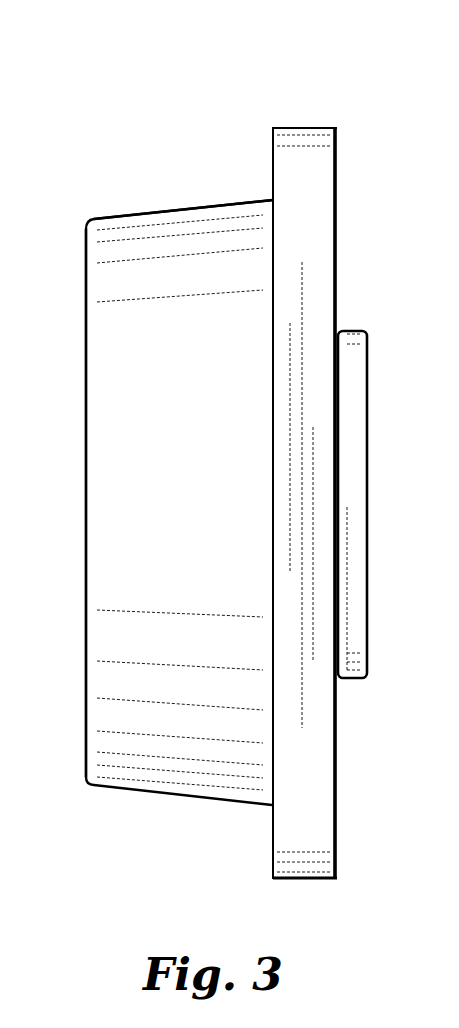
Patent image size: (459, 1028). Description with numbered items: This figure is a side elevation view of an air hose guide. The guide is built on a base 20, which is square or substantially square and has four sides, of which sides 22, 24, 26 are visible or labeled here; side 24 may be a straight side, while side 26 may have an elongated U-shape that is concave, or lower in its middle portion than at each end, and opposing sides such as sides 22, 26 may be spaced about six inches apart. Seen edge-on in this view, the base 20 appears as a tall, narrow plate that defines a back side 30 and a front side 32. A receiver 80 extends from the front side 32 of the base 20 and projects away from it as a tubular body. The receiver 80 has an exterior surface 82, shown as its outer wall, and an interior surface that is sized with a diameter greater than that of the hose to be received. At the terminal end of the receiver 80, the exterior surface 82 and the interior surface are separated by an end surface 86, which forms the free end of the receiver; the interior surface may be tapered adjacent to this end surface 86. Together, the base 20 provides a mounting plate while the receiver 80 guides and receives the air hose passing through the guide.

The base 20 is at (348, 112).
The side 22 is at (298, 128).
The side 24 is at (317, 298).
The side 26 is at (292, 880).
The back side 30 is at (337, 172).
The front side 32 is at (273, 163).
The receiver 80 is at (146, 161).
The exterior surface 82 is at (185, 210).
The end surface 86 is at (85, 285).